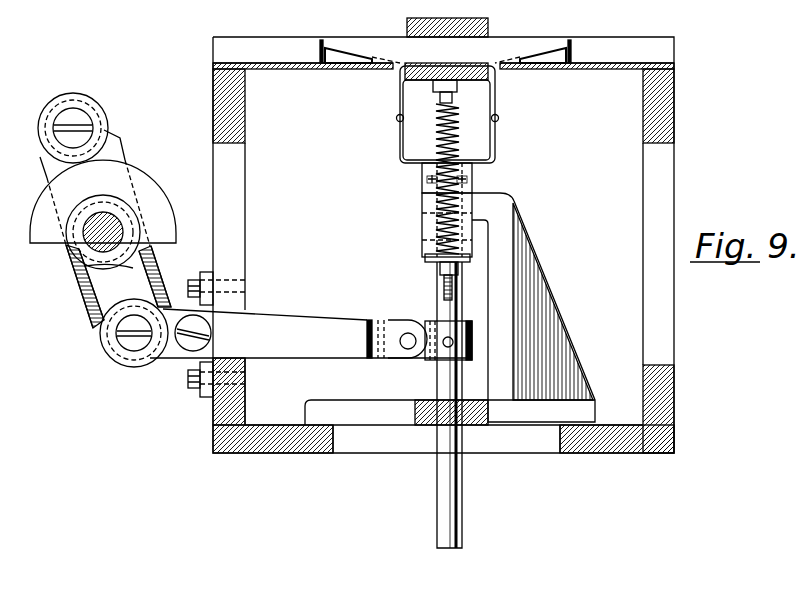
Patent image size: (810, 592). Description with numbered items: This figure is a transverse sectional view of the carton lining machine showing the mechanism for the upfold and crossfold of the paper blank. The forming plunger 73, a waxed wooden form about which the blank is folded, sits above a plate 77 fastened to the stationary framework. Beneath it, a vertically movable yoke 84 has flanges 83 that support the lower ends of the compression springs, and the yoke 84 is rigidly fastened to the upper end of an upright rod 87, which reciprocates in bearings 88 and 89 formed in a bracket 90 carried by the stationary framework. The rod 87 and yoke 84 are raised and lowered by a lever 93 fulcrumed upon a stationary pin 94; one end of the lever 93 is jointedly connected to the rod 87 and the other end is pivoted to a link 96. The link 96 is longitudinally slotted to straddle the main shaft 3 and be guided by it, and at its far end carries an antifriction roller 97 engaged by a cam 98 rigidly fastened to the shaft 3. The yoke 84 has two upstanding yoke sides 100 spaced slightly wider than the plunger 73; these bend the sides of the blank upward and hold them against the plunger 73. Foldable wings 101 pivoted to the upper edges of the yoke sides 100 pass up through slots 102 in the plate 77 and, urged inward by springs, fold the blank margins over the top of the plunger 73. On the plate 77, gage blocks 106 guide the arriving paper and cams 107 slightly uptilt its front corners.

The main shaft 3 is at (90, 240).
The forming plunger 73 is at (447, 18).
The plate 77 is at (640, 64).
The flanges 83 is at (425, 256).
The yoke 84 is at (404, 163).
The rod 87 is at (440, 496).
The bearing 88 is at (422, 215).
The bearing 89 is at (427, 408).
The bracket 90 is at (541, 316).
The lever 93 is at (312, 328).
The stationary pin 94 is at (192, 346).
The link 96 is at (86, 296).
The antifriction roller 97 is at (107, 123).
The cam 98 is at (157, 193).
The yoke sides 100 is at (399, 134).
The foldable wings 101 is at (400, 101).
The slots 102 is at (395, 69).
The gage blocks 106 is at (321, 46).
The cams 107 is at (345, 50).